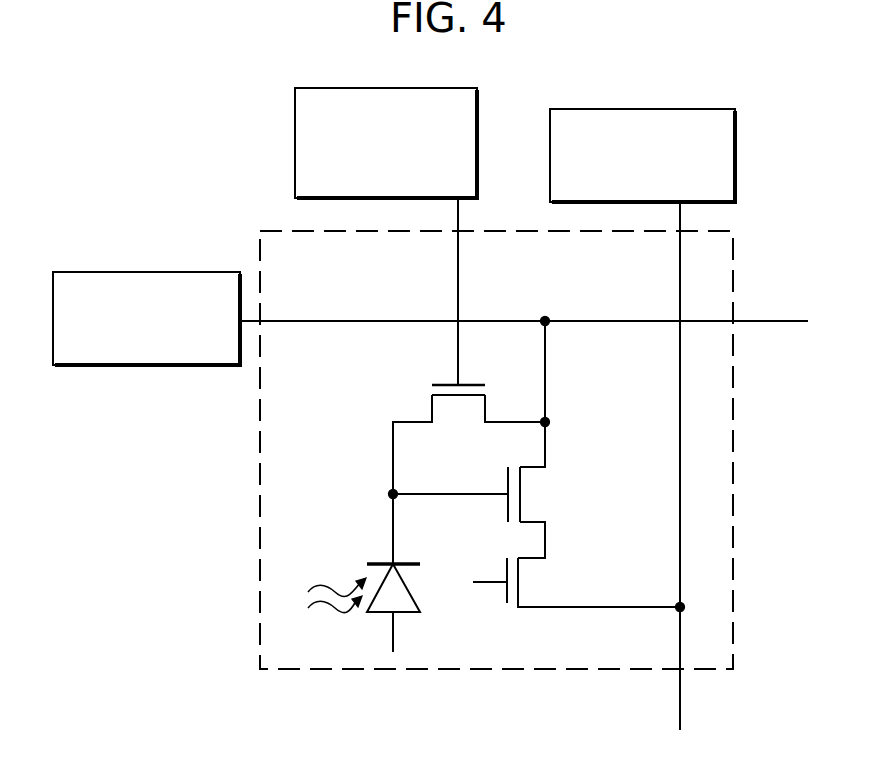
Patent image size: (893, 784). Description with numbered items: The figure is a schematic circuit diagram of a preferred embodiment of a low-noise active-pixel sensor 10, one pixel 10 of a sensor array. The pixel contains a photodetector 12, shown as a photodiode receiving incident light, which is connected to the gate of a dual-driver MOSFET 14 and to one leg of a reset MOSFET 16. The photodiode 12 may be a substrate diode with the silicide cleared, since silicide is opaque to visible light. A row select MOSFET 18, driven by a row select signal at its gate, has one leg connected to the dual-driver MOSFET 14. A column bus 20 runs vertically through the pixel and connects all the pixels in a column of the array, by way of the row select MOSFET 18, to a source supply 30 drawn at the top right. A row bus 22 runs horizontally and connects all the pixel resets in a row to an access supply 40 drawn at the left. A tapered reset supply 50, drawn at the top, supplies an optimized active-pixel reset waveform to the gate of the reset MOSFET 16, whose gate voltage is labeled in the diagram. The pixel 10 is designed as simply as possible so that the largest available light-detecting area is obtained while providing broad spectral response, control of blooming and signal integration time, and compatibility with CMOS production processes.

The low-noise active-pixel sensor 10 is at (262, 232).
The photodetector 12 is at (415, 590).
The dual-driver MOSFET 14 is at (522, 490).
The reset MOSFET 16 is at (458, 398).
The row select MOSFET 18 is at (520, 580).
The column bus 20 is at (680, 705).
The row bus 22 is at (372, 321).
The source supply 30 is at (735, 133).
The access supply 40 is at (98, 272).
The tapered reset supply 50 is at (295, 113).